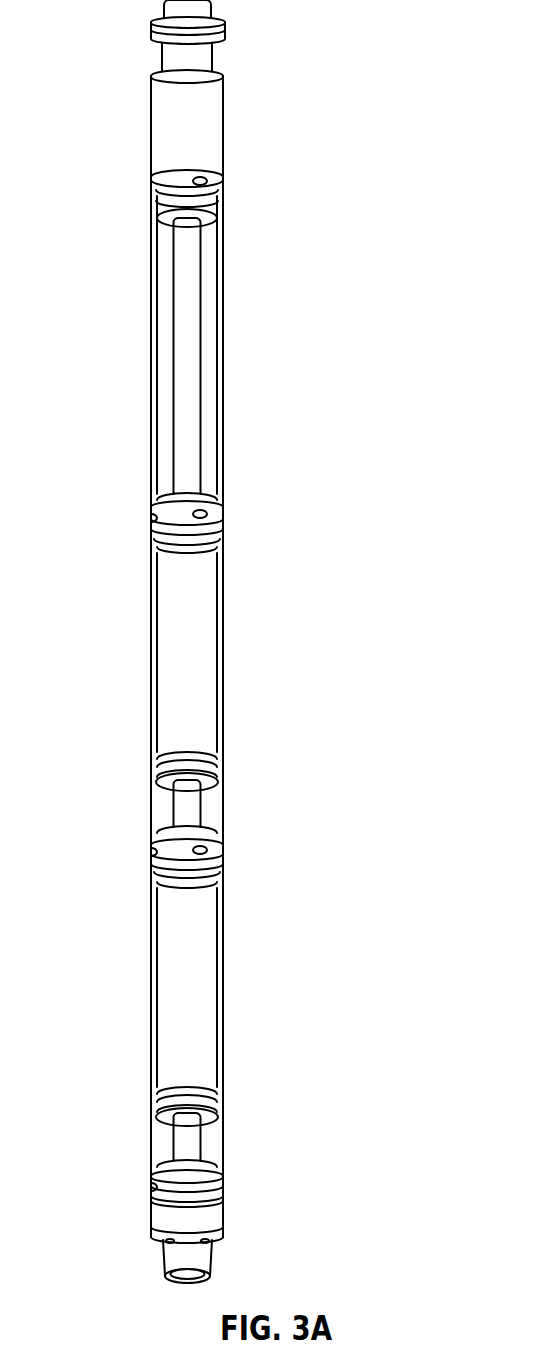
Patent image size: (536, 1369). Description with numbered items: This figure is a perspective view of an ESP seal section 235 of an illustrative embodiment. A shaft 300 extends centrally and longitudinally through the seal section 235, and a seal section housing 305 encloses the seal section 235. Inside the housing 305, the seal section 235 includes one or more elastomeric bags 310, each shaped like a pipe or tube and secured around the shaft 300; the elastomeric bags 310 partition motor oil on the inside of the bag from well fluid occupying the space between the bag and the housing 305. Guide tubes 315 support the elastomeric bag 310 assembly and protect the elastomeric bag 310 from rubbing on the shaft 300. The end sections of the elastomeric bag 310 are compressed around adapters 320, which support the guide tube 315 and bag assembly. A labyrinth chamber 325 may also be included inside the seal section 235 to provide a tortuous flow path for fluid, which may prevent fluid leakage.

The seal section 235 is at (142, 130).
The shaft 300 is at (181, 289).
The seal section housing 305 is at (226, 451).
The elastomeric bag 310 is at (180, 661).
The guide tube 315 is at (205, 821).
The adapter 320 is at (165, 851).
The labyrinth chamber 325 is at (163, 322).